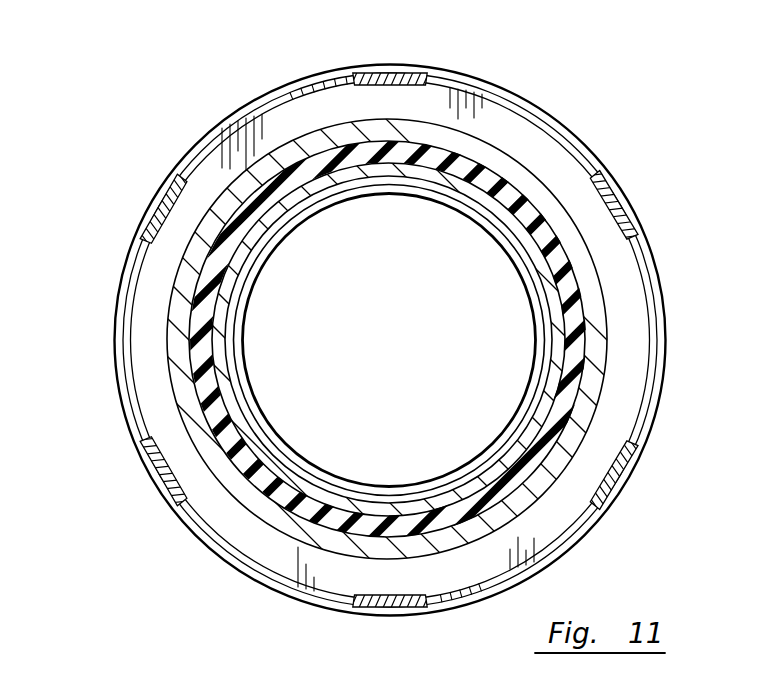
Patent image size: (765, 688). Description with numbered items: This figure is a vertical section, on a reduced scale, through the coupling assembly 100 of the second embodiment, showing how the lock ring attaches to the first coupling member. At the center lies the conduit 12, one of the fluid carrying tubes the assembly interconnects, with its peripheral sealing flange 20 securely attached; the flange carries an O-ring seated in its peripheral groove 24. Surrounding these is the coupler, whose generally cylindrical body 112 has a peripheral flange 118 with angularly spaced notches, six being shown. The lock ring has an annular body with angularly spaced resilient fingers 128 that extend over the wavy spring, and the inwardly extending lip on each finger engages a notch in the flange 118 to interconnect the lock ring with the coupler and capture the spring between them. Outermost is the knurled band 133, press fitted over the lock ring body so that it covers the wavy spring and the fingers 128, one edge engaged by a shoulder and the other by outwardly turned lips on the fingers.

The coupling assembly 100 is at (382, 344).
The conduit 12 is at (240, 289).
The peripheral sealing flange 20 is at (252, 448).
The peripheral groove 24 is at (556, 258).
The cylindrical body 112 is at (598, 340).
The peripheral flange 118 is at (145, 325).
The resilient fingers 128 is at (393, 76).
The knurled band 133 is at (530, 104).